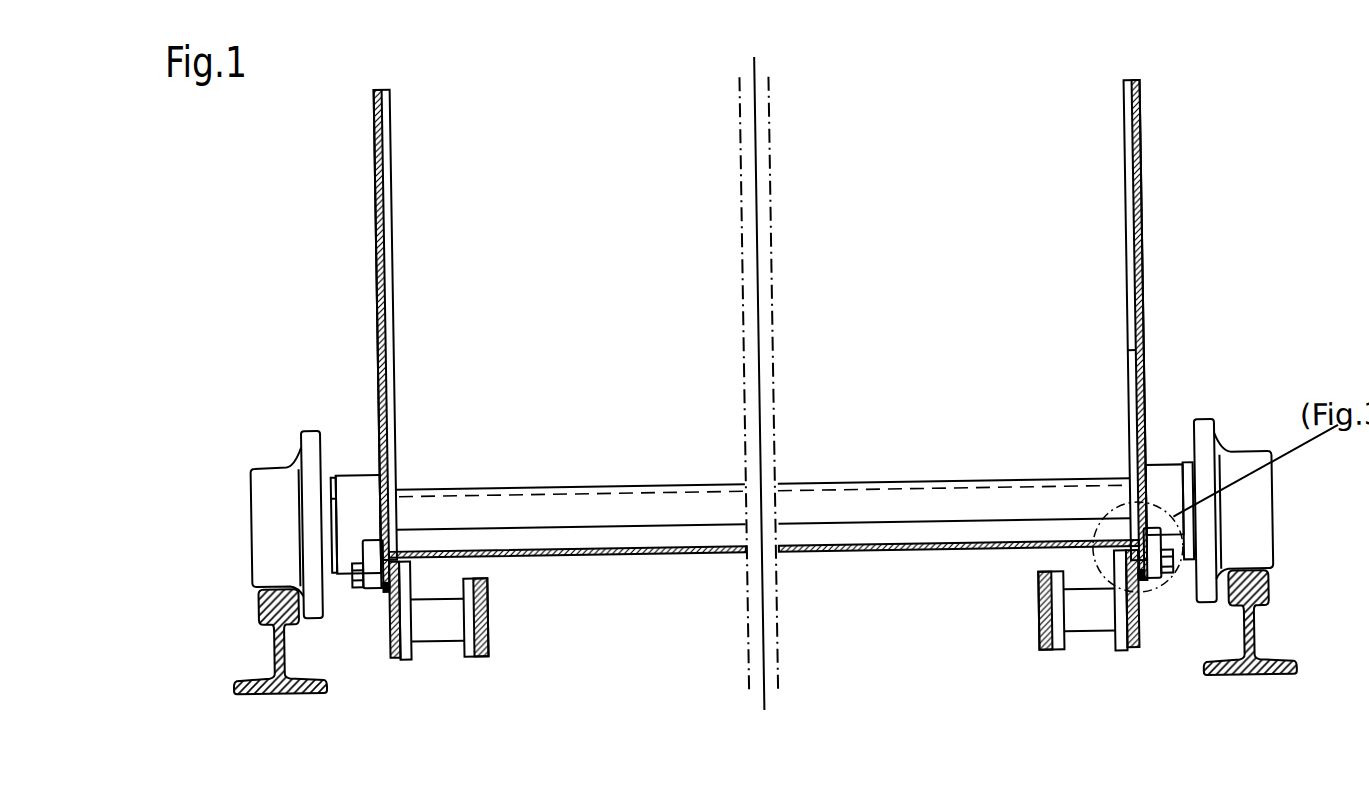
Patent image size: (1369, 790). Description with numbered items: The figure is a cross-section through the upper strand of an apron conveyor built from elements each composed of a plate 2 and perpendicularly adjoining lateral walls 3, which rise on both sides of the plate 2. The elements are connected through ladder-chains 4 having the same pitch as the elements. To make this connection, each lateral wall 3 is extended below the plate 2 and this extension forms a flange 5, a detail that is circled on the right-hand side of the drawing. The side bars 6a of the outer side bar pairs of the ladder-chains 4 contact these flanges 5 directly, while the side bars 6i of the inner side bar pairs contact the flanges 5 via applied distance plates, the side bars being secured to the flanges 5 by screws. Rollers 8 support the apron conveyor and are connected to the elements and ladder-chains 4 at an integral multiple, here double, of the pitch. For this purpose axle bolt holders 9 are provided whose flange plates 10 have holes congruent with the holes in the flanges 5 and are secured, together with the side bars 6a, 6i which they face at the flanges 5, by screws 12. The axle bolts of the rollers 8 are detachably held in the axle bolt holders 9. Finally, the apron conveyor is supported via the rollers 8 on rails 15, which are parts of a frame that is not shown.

The plate 2 is at (622, 560).
The lateral wall 3 is at (380, 240).
The ladder-chain 4 is at (450, 632).
The flange 5 is at (386, 592).
The side bar of outer side bar pair 6a is at (394, 662).
The side bar of inner side bar pair 6i is at (411, 660).
The roller 8 is at (266, 501).
The axle bolt holder 9 is at (369, 484).
The flange plate 10 is at (372, 550).
The screw 12 is at (357, 590).
The rail 15 is at (262, 604).